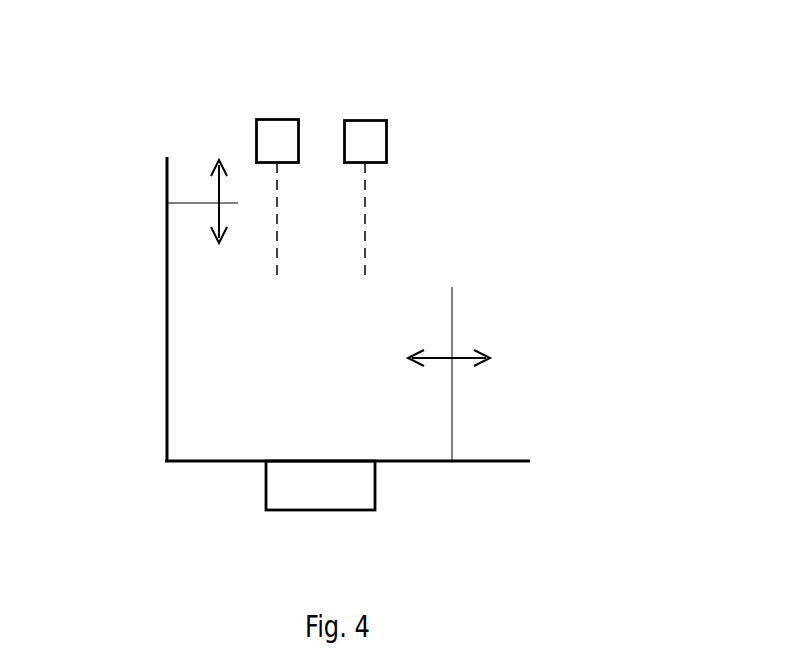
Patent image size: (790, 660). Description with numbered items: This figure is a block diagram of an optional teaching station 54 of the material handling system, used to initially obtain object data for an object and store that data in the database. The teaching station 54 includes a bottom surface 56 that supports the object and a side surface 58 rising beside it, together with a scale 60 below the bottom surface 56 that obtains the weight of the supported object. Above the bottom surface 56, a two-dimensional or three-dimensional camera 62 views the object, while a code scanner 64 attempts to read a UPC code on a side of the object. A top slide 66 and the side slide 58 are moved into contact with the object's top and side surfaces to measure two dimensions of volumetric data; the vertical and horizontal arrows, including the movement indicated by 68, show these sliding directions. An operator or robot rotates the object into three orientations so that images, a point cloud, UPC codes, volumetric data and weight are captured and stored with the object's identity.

The teaching station 54 is at (633, 143).
The bottom surface 56 is at (210, 461).
The side surface 58 is at (167, 325).
The scale 60 is at (375, 503).
The 2D or 3D camera 62 is at (275, 119).
The code scanner 64 is at (384, 120).
The top slide 66 is at (452, 410).
The vertical movement axis 68 is at (196, 203).